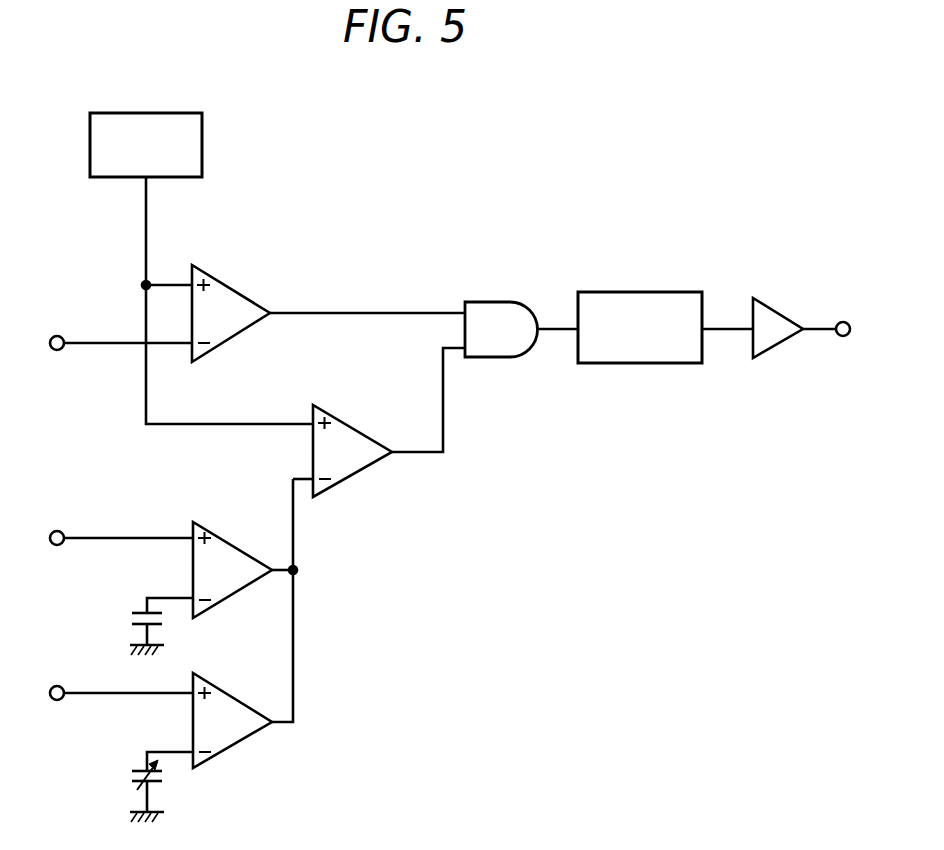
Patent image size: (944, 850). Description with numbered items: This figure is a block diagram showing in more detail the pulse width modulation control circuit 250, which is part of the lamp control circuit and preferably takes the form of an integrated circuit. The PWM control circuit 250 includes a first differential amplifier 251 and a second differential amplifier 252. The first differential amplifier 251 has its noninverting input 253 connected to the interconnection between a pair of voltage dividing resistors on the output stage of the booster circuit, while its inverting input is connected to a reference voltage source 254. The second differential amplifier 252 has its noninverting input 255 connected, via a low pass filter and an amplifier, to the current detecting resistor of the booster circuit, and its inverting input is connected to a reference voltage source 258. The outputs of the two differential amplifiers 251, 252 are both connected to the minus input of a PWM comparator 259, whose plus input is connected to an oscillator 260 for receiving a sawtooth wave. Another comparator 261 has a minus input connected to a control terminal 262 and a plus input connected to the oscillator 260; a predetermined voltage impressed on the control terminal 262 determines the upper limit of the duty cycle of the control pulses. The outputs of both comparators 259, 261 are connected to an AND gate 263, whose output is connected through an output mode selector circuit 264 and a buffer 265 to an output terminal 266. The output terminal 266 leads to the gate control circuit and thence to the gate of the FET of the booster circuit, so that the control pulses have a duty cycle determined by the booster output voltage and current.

The pulse width modulation control circuit 250 is at (532, 158).
The oscillator 260 is at (175, 112).
The comparator 261 is at (240, 288).
The control terminal 262 is at (57, 336).
The AND gate 263 is at (497, 302).
The output mode selector circuit 264 is at (650, 292).
The buffer 265 is at (770, 302).
The output terminal 266 is at (843, 322).
The PWM comparator 259 is at (350, 423).
The first differential amplifier 251 is at (227, 543).
The second differential amplifier 252 is at (230, 748).
The noninverting input 253 is at (57, 531).
The reference voltage source 254 is at (133, 612).
The noninverting input 255 is at (57, 687).
The reference voltage source 258 is at (140, 770).